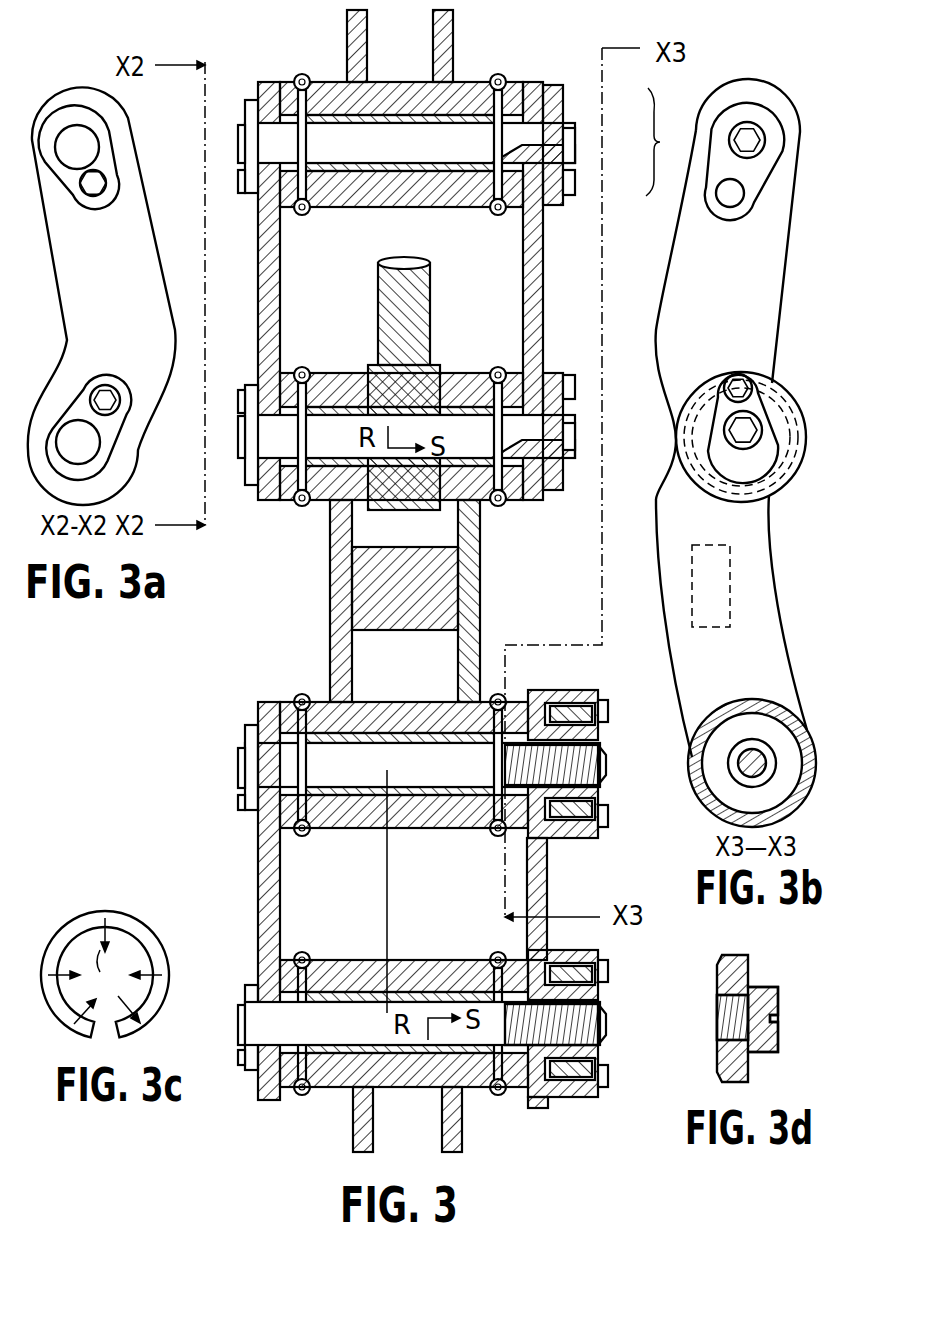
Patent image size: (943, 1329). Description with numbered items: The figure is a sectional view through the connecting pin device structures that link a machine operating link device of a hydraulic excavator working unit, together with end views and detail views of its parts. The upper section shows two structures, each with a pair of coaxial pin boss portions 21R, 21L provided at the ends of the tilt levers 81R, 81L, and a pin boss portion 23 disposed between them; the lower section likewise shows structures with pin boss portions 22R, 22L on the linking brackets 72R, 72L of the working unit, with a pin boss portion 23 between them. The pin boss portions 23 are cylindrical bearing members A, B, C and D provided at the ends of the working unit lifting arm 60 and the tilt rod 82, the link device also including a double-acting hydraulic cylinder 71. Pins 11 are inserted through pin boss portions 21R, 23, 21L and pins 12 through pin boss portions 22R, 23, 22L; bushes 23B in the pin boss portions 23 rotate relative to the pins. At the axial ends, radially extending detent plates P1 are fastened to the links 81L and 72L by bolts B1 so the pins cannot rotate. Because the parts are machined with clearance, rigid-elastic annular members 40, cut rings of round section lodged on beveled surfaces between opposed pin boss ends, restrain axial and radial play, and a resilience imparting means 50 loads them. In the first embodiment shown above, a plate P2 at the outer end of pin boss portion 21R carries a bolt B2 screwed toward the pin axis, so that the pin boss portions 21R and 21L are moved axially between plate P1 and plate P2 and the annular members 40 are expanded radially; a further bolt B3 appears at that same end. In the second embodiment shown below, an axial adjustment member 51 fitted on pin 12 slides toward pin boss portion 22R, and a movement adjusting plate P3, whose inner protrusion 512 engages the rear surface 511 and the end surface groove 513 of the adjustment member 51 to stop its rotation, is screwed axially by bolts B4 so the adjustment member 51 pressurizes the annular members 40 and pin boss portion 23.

In FIG. 3, the pin 11 is at (338, 437).
In FIG. 3, the pin 12 is at (388, 900).
In FIG. 3, the pin boss portion 21L is at (268, 82).
In FIG. 3, the pin boss portion 21R is at (533, 84).
In FIG. 3, the pin boss portion 22L is at (270, 702).
In FIG. 3, the pin boss portion 22R is at (545, 690).
In FIG. 3, the pin boss portion 23 is at (394, 82).
In FIG. 3, the bush 23B is at (344, 208).
In FIG. 3, the rigid-elastic annular member 40 is at (302, 367).
In FIG. 3C, the rigid-elastic annular member 40 is at (135, 912).
In FIG. 3, the resilience imparting means 50 is at (660, 124).
In FIG. 3, the axial adjustment member 51 is at (540, 1108).
In FIG. 3D, the axial adjustment member 51 is at (745, 951).
In FIG. 3D, the rear surface 511 is at (779, 995).
In FIG. 3, the inner protrusion 512 is at (602, 1030).
In FIG. 3D, the inner protrusion 512 is at (732, 1017).
In FIG. 3D, the end surface groove 513 is at (779, 1020).
In FIG. 3, the working unit lifting arm 60 is at (455, 34).
In FIG. 3, the double-acting hydraulic cylinder 71 is at (430, 322).
In FIG. 3, the linking bracket 72L is at (258, 904).
In FIG. 3, the linking bracket 72R is at (548, 870).
In FIG. 3A, the tilt lever 81L is at (260, 262).
In FIG. 3B, the tilt lever 81R is at (544, 312).
In FIG. 3, the tilt rod 82 is at (481, 580).
In FIG. 3, the cylindrical bearing member A is at (566, 102).
In FIG. 3B, the cylindrical bearing member A is at (770, 120).
In FIG. 3, the cylindrical bearing member B is at (576, 418).
In FIG. 3B, the cylindrical bearing member B is at (752, 440).
In FIG. 3, the cylindrical bearing member C is at (602, 760).
In FIG. 3B, the cylindrical bearing member C is at (770, 758).
In FIG. 3, the cylindrical bearing member D is at (610, 1004).
In FIG. 3, the detent plate P1 is at (248, 110).
In FIG. 3, the plate P2 is at (576, 140).
In FIG. 3, the movement adjusting plate P3 is at (590, 690).
In FIG. 3, the bolt B1 is at (240, 190).
In FIG. 3, the bolt B2 is at (576, 152).
In FIG. 3, the right lower bolt B3 is at (576, 180).
In FIG. 3, the bolt B4 is at (610, 1079).